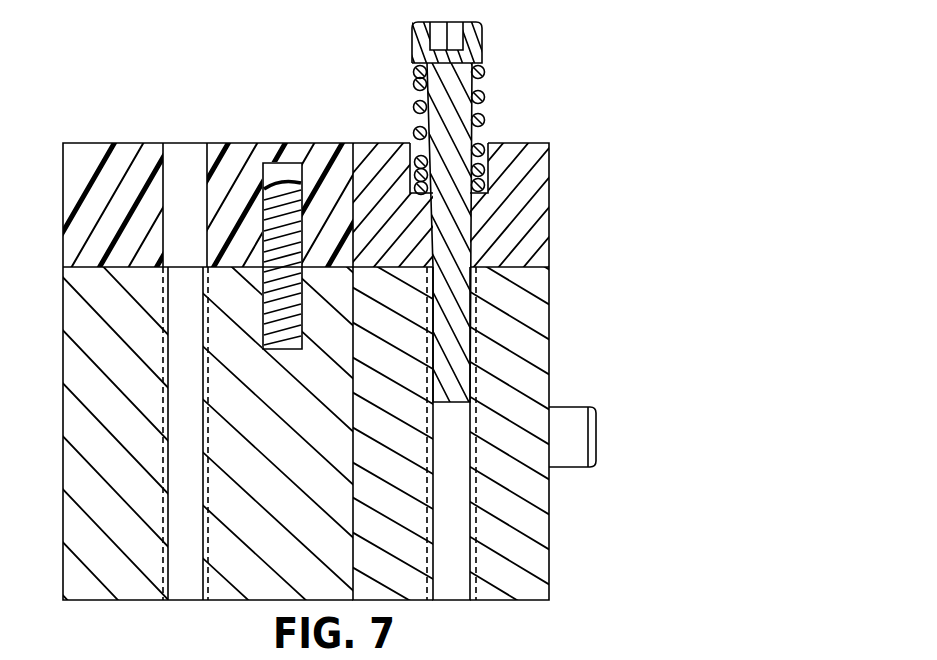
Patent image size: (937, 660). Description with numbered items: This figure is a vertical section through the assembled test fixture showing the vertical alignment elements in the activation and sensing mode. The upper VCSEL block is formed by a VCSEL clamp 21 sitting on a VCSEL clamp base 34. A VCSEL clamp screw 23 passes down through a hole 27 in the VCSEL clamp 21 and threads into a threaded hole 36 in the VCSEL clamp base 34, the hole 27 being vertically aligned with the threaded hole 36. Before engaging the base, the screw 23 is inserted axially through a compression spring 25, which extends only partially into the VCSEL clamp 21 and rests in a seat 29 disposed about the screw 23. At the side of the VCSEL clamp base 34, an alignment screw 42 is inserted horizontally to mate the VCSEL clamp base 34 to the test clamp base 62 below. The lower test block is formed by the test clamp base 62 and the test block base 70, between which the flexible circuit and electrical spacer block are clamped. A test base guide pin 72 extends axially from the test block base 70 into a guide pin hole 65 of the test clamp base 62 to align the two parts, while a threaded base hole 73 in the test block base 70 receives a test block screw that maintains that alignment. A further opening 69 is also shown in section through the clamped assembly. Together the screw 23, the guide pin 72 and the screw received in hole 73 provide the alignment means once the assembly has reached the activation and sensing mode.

The VCSEL clamp 21 is at (385, 142).
The VCSEL clamp screw 23 is at (484, 22).
The compression spring 25 is at (482, 95).
The hole 27 is at (482, 250).
The seat 29 is at (490, 190).
The VCSEL clamp base 34 is at (535, 352).
The threaded hole 36 is at (454, 588).
The alignment screw 42 is at (599, 450).
The test clamp base 62 is at (104, 142).
The guide pin hole 65 is at (274, 176).
The upper slot 69 is at (182, 142).
The test block base 70 is at (242, 585).
The test base guide pin 72 is at (280, 212).
The threaded base hole 73 is at (182, 377).